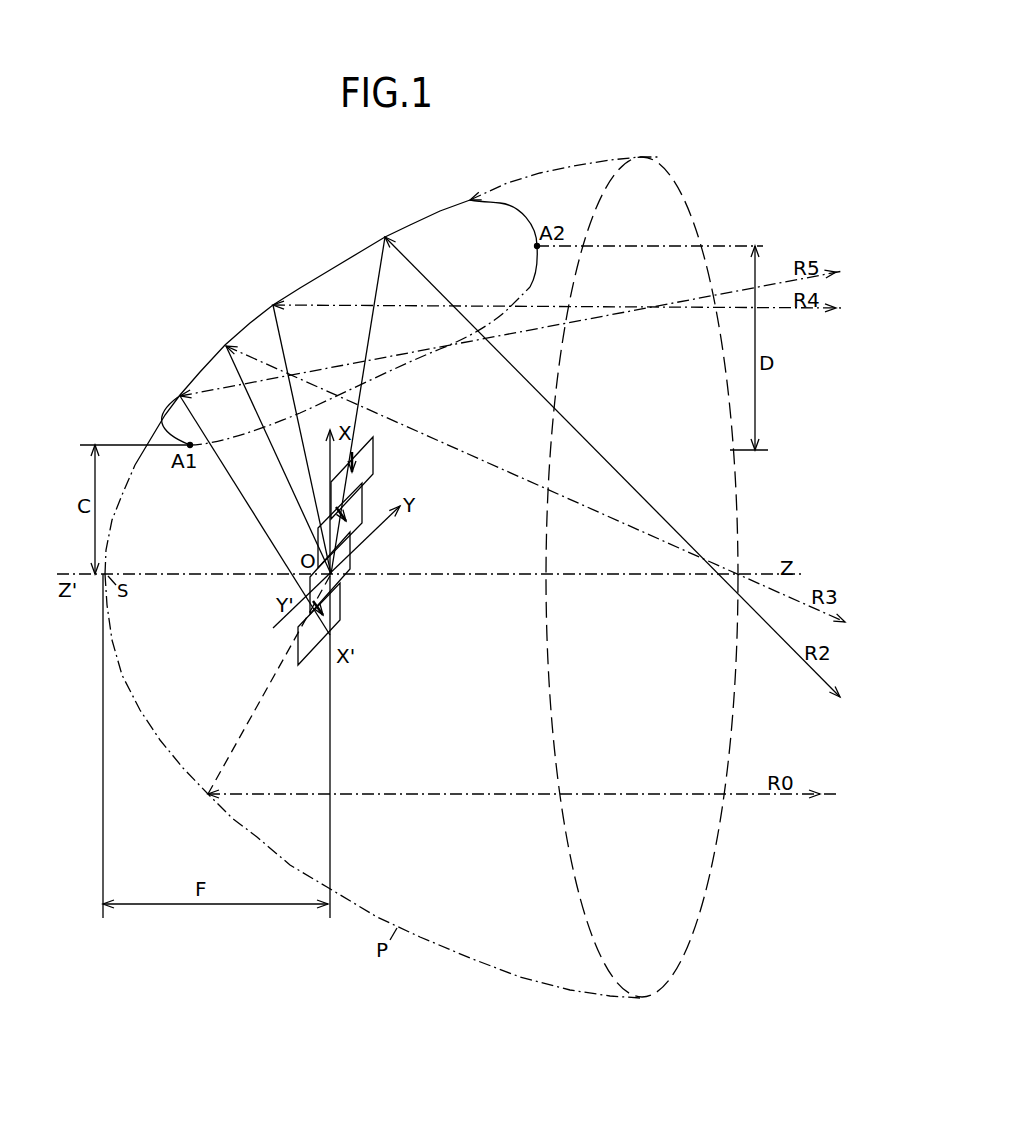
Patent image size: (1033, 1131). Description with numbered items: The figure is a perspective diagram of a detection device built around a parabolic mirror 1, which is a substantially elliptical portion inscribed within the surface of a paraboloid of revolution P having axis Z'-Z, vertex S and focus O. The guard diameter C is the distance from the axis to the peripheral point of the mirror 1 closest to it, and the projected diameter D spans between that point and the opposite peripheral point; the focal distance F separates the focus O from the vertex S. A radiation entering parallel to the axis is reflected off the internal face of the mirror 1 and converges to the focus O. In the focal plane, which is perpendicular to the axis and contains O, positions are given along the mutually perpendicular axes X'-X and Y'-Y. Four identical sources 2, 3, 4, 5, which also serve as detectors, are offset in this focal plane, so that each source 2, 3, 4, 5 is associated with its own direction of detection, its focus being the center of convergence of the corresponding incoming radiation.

The parabolic mirror 1 is at (352, 254).
The source 2 is at (366, 462).
The source 3 is at (355, 504).
The source 4 is at (343, 567).
The source 5 is at (338, 612).